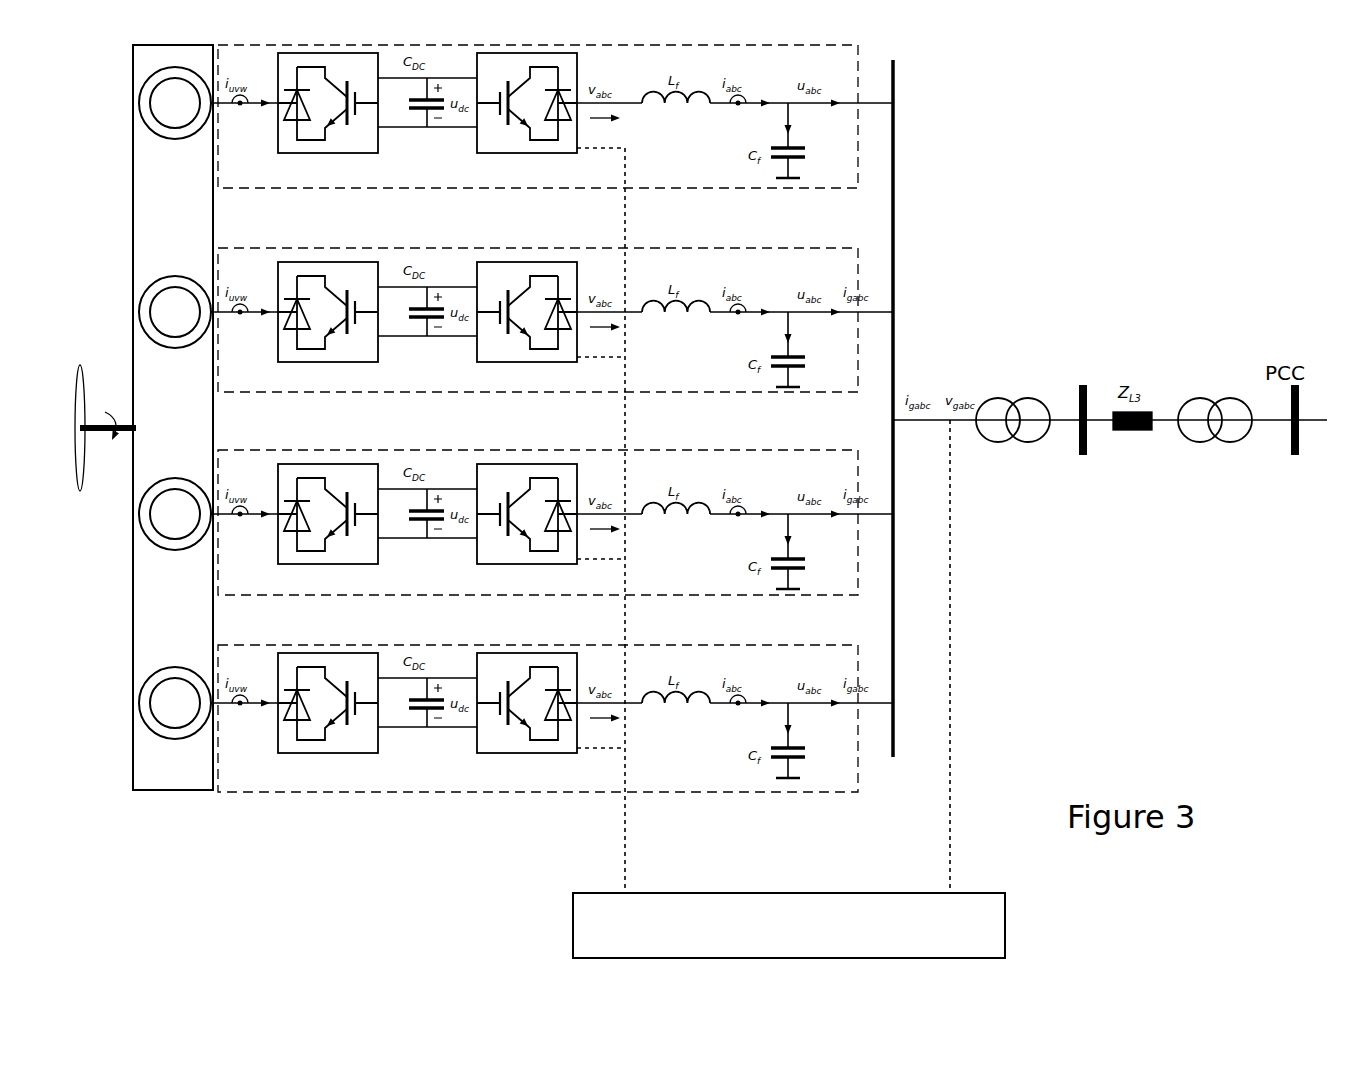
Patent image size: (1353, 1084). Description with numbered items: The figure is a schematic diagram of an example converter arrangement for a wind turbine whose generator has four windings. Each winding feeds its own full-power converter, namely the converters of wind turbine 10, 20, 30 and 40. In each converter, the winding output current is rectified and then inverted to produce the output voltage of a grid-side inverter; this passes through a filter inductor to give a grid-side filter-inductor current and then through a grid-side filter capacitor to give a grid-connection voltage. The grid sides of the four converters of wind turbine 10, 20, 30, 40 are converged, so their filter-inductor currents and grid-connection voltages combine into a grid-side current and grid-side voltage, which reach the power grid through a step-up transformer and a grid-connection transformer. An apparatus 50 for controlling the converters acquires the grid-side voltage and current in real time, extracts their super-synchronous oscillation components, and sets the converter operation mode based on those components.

The converter of wind turbine 10 is at (516, 116).
The converter of wind turbine 20 is at (516, 320).
The converter of wind turbine 30 is at (516, 522).
The converter of wind turbine 40 is at (516, 718).
The apparatus for controlling a converter of wind turbine 50 is at (789, 553).